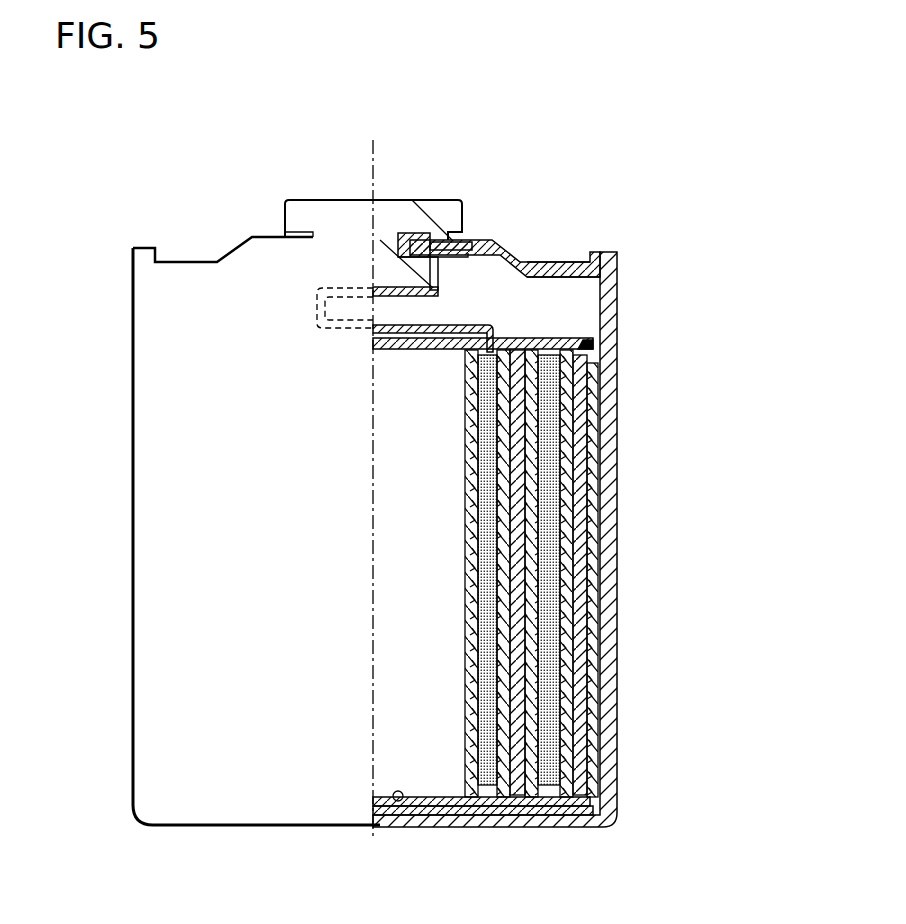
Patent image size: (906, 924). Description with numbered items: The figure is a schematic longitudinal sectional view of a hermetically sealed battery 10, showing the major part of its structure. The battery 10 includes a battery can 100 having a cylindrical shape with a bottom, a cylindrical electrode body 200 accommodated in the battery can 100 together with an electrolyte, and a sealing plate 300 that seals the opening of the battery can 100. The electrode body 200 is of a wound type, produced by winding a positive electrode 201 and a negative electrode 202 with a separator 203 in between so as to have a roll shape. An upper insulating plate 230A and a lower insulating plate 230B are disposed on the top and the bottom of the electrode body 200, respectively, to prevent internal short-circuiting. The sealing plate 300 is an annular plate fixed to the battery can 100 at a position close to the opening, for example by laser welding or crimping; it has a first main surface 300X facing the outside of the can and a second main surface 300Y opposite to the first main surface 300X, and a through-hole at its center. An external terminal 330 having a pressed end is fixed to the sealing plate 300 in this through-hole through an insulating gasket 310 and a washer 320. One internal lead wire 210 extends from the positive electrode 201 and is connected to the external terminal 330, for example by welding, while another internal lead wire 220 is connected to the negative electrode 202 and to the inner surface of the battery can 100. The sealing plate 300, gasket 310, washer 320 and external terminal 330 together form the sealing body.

The battery 10 is at (615, 139).
The battery can 100 is at (617, 493).
The cylindrical electrode body 200 is at (617, 573).
The positive electrode 201 is at (565, 636).
The negative electrode 202 is at (590, 596).
The separator 203 is at (600, 558).
The internal lead wire 210 is at (430, 323).
The internal lead wire 220 is at (500, 815).
The upper insulating plate 230A is at (545, 345).
The lower insulating plate 230B is at (405, 802).
The sealing plate 300 is at (492, 240).
The first main surface 300X is at (573, 255).
The second main surface 300Y is at (563, 287).
The gasket 310 is at (383, 240).
The washer 320 is at (400, 263).
The external terminal 330 is at (397, 210).